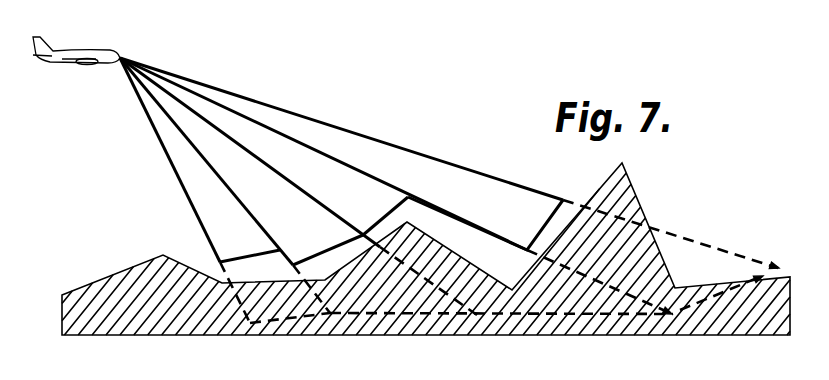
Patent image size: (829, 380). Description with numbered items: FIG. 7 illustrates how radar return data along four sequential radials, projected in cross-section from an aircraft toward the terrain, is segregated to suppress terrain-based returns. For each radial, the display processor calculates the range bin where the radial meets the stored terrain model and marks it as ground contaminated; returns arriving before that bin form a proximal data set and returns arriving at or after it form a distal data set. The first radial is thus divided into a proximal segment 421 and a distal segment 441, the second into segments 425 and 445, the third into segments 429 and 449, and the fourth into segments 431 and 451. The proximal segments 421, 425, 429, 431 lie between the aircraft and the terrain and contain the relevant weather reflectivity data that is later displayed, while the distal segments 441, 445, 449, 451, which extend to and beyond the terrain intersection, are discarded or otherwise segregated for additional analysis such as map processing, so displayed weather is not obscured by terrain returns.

The proximal segment of radial 421 is at (248, 248).
The proximal segment of radial 425 is at (316, 238).
The proximal segment of radial 429 is at (371, 210).
The proximal segment of radial 431 is at (471, 200).
The distal segment of radial 441 is at (274, 280).
The distal segment of radial 445 is at (343, 277).
The distal segment of radial 449 is at (496, 260).
The distal segment of radial 451 is at (704, 277).